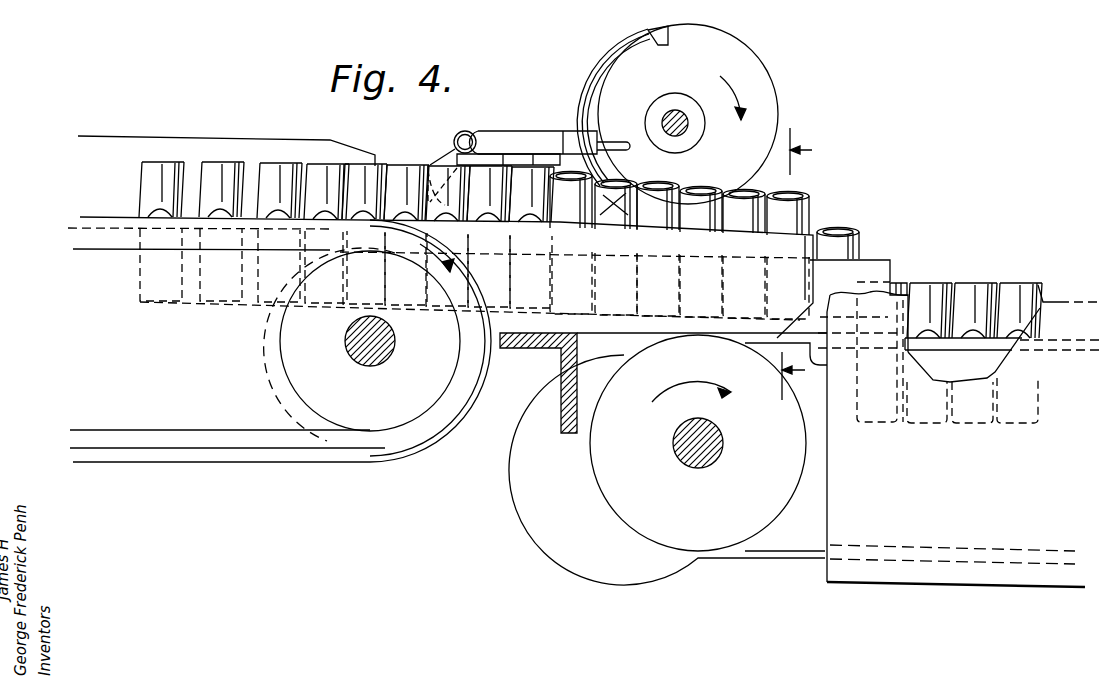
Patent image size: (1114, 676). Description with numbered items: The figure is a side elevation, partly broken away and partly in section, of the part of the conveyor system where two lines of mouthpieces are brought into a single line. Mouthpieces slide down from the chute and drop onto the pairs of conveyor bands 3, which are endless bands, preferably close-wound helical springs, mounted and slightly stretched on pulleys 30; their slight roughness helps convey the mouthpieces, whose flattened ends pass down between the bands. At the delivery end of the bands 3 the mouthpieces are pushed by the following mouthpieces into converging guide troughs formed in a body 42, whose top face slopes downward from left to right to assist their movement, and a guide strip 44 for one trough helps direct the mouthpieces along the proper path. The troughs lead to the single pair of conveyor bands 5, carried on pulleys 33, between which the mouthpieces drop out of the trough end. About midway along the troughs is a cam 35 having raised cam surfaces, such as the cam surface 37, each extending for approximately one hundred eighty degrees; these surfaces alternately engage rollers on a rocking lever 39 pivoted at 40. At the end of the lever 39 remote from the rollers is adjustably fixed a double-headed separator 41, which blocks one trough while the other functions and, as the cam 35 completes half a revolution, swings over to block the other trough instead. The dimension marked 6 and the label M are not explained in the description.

The conveyor bands 3 is at (280, 463).
The conveyor bands 5 is at (957, 342).
The spacing dimension 6 is at (807, 264).
The pulleys 30 is at (387, 450).
The pulleys 33 is at (622, 494).
The cam 35 is at (752, 83).
The cam surface 37 is at (612, 61).
The rocking lever 39 is at (490, 140).
The pivot 40 is at (522, 160).
The double-headed separator 41 is at (430, 202).
The body 42 is at (531, 305).
The guide strip 44 is at (878, 267).
The container M is at (798, 212).